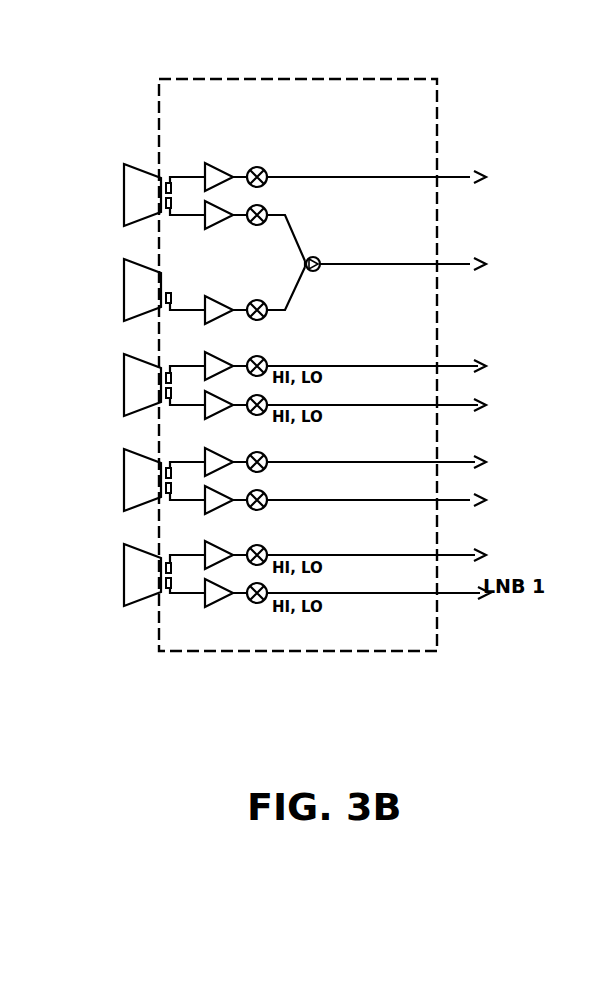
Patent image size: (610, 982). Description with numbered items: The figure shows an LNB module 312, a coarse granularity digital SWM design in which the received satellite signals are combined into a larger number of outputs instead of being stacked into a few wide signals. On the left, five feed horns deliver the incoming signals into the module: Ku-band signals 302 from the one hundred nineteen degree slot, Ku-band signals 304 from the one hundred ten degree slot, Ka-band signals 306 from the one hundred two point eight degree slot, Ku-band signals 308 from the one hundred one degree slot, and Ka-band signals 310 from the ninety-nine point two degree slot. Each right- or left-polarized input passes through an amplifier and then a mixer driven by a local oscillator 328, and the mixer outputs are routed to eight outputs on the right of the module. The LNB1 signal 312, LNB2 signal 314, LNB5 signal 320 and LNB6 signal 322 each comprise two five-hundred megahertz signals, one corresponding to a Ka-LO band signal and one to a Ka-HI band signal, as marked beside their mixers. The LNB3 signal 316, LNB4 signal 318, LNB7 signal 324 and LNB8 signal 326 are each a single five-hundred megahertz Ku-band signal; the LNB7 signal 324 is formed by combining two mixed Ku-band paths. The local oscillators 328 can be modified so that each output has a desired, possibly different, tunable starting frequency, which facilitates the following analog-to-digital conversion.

The Ku-band signals 302 is at (125, 177).
The Ku-band signals 304 is at (124, 272).
The Ka-band signals 306 is at (124, 372).
The Ku-band signals 308 is at (124, 462).
The Ka-band signals 310 is at (124, 552).
The LNB module 312 is at (278, 77).
The LNB2 signal 314 is at (470, 558).
The LNB3 signal 316 is at (470, 503).
The LNB4 signal 318 is at (485, 465).
The LNB5 signal 320 is at (485, 410).
The LNB6 signal 322 is at (485, 370).
The LNB7 signal 324 is at (465, 265).
The LNB8 signal 326 is at (460, 177).
The local oscillators 328 is at (265, 170).